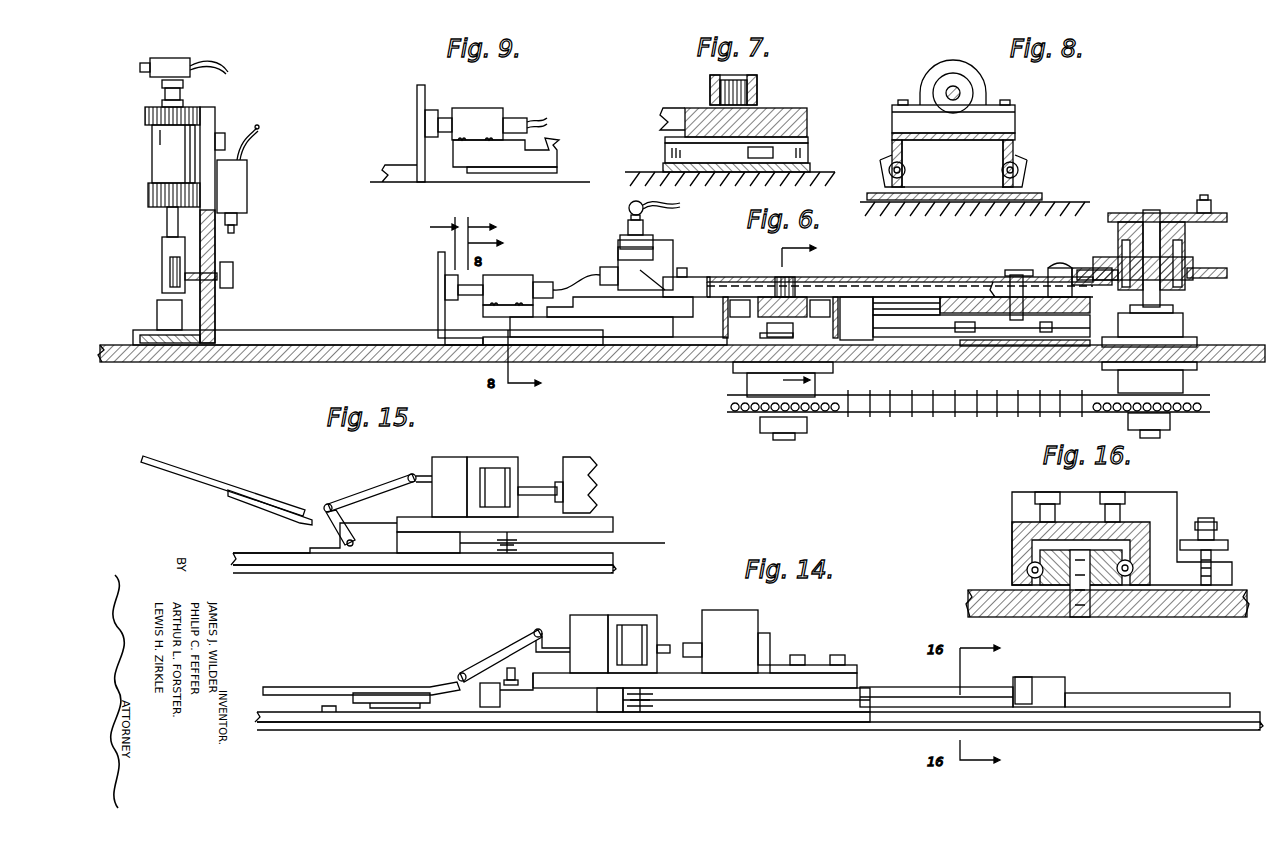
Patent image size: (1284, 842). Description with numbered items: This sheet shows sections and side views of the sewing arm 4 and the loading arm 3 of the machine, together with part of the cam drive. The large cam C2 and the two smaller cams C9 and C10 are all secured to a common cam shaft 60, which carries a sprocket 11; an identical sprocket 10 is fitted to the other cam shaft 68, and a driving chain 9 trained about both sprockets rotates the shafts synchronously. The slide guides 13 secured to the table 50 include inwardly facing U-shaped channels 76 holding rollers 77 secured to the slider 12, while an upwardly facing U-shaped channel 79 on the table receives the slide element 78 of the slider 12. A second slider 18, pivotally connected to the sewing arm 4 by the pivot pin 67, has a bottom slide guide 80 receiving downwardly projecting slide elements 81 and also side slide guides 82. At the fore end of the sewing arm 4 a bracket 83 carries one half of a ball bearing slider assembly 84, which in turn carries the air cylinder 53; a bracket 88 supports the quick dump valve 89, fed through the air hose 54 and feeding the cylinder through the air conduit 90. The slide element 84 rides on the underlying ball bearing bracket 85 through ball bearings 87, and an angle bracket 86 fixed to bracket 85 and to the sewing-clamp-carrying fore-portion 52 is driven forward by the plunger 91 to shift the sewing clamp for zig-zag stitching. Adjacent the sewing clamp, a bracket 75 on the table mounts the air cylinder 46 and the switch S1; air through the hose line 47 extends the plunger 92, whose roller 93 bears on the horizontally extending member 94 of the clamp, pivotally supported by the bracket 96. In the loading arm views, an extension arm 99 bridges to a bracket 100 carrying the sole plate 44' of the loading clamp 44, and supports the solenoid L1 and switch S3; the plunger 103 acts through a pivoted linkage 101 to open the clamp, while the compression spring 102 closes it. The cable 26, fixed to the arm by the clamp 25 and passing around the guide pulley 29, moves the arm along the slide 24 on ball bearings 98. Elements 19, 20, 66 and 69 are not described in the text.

In FIG. 14, the loading arm 3 is at (892, 687).
In FIG. 16, the loading arm 3 is at (1012, 533).
In FIG. 6, the sewing arm 4 is at (899, 286).
In FIG. 7, the sewing arm 4 is at (757, 86).
In FIG. 6, the driving chain 9 is at (972, 415).
In FIG. 6, the sprocket 10 is at (755, 418).
In FIG. 6, the sprocket 11 is at (1186, 415).
In FIG. 6, the slider 12 is at (805, 317).
In FIG. 7, the slider 12 is at (808, 121).
In FIG. 6, the slide guides 13 is at (723, 325).
In FIG. 7, the slide guides 13 is at (665, 140).
In FIG. 6, the slider 18 is at (1092, 306).
In FIG. 6, the slide 19 is at (890, 320).
In FIG. 6, the cylinder 20 is at (1056, 269).
In FIG. 14, the slide 24 is at (1225, 693).
In FIG. 16, the slide 24 is at (1108, 585).
In FIG. 14, the clamp 25 is at (1030, 677).
In FIG. 16, the clamp 25 is at (1225, 536).
In FIG. 15, the cable 26 is at (640, 543).
In FIG. 14, the cable 26 is at (746, 701).
In FIG. 16, the cable 26 is at (1228, 548).
In FIG. 15, the guide pulley 29 is at (517, 547).
In FIG. 14, the guide pulley 29 is at (650, 711).
In FIG. 15, the loading clamp 44 is at (223, 486).
In FIG. 14, the loading clamp 44 is at (361, 677).
In FIG. 15, the sole plate 44' is at (311, 521).
In FIG. 14, the sole plate 44' is at (361, 704).
In FIG. 6, the air cylinder 46 is at (152, 145).
In FIG. 6, the hose line 47 is at (194, 72).
In FIG. 6, the table 50 is at (218, 362).
In FIG. 7, the table 50 is at (645, 172).
In FIG. 8, the table 50 is at (1068, 205).
In FIG. 15, the table 50 is at (622, 569).
In FIG. 14, the table 50 is at (1252, 725).
In FIG. 16, the table 50 is at (1226, 612).
In FIG. 6, the sewing-clamp-carrying fore-portion 52 is at (350, 338).
In FIG. 9, the sewing-clamp-carrying fore-portion 52 is at (414, 165).
In FIG. 6, the air cylinder 53 is at (521, 284).
In FIG. 9, the air cylinder 53 is at (507, 108).
In FIG. 8, the air cylinder 53 is at (938, 80).
In FIG. 6, the air hose 54 is at (668, 211).
In FIG. 6, the cam shaft 60 is at (1150, 222).
In FIG. 6, the sleeve 66 is at (790, 279).
In FIG. 7, the sleeve 66 is at (720, 92).
In FIG. 6, the pivot pin 67 is at (1015, 270).
In FIG. 6, the cam shaft 68 is at (790, 440).
In FIG. 6, the bolt 69 is at (1212, 210).
In FIG. 6, the bracket 75 is at (215, 328).
In FIG. 6, the U-shaped channels 76 is at (740, 300).
In FIG. 7, the U-shaped channels 76 is at (670, 113).
In FIG. 6, the rollers 77 is at (824, 300).
In FIG. 6, the slide element 78 is at (767, 328).
In FIG. 7, the slide element 78 is at (748, 153).
In FIG. 6, the U-shaped channel 79 is at (763, 337).
In FIG. 7, the U-shaped channel 79 is at (815, 161).
In FIG. 6, the bottom slide guide 80 is at (1118, 319).
In FIG. 6, the slide elements 81 is at (975, 328).
In FIG. 6, the side slide guides 82 is at (932, 307).
In FIG. 6, the bracket 83 is at (666, 318).
In FIG. 6, the ball bearing slider assembly 84 is at (620, 307).
In FIG. 9, the ball bearing slider assembly 84 is at (560, 149).
In FIG. 8, the ball bearing slider assembly 84 is at (1015, 137).
In FIG. 6, the ball bearing bracket 85 is at (591, 327).
In FIG. 9, the ball bearing bracket 85 is at (560, 171).
In FIG. 8, the ball bearing bracket 85 is at (1000, 169).
In FIG. 6, the angle bracket 86 is at (438, 305).
In FIG. 9, the angle bracket 86 is at (417, 100).
In FIG. 8, the angle bracket 86 is at (1030, 193).
In FIG. 8, the ball bearings 87 is at (905, 162).
In FIG. 6, the bracket 88 is at (673, 254).
In FIG. 6, the quick dump valve 89 is at (618, 258).
In FIG. 6, the air conduit 90 is at (590, 273).
In FIG. 6, the plunger 91 is at (452, 301).
In FIG. 8, the plunger 91 is at (965, 88).
In FIG. 6, the plunger 92 is at (167, 224).
In FIG. 6, the roller 93 is at (165, 285).
In FIG. 6, the horizontally extending member 94 is at (180, 284).
In FIG. 6, the bracket 96 is at (157, 318).
In FIG. 16, the ball bearings 98 is at (1027, 569).
In FIG. 15, the extension arm 99 is at (453, 522).
In FIG. 14, the extension arm 99 is at (622, 688).
In FIG. 15, the bracket 100 is at (410, 573).
In FIG. 14, the bracket 100 is at (578, 712).
In FIG. 15, the pivoted linkage 101 is at (346, 480).
In FIG. 14, the pivoted linkage 101 is at (504, 662).
In FIG. 14, the compression spring 102 is at (520, 676).
In FIG. 15, the plunger 103 is at (525, 487).
In FIG. 14, the plunger 103 is at (665, 645).
In FIG. 6, the switch S1 is at (248, 192).
In FIG. 15, the switch S3 is at (590, 460).
In FIG. 14, the switch S3 is at (703, 612).
In FIG. 15, the solenoid L1 is at (497, 470).
In FIG. 14, the solenoid L1 is at (639, 630).
In FIG. 6, the cam C2 is at (1227, 273).
In FIG. 6, the cam C9 is at (1193, 266).
In FIG. 6, the cam C10 is at (1227, 218).